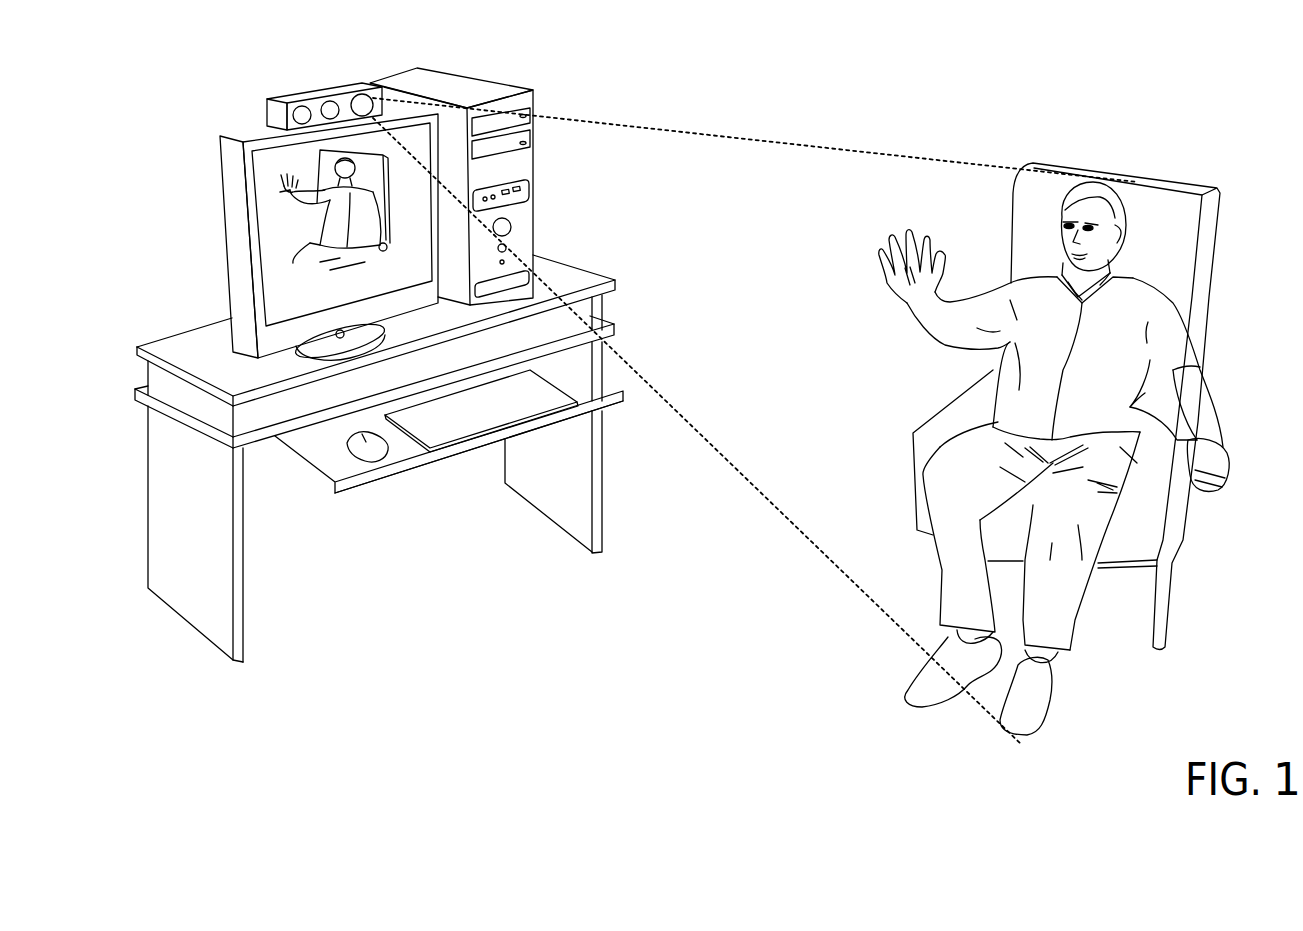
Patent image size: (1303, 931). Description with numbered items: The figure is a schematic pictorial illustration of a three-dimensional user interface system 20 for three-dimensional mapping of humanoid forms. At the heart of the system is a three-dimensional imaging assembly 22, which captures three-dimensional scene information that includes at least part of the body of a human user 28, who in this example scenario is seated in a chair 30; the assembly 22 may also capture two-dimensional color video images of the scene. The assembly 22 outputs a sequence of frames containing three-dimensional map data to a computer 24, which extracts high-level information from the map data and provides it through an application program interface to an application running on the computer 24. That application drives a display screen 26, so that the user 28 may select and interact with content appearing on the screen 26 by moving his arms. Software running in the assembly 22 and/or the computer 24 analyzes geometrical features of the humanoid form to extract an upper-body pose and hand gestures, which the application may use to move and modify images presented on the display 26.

The 3D user interface system 20 is at (610, 96).
The 3D imaging assembly 22 is at (287, 103).
The computer 24 is at (534, 213).
The display screen 26 is at (277, 298).
The human user 28 is at (1113, 203).
The chair 30 is at (1211, 272).